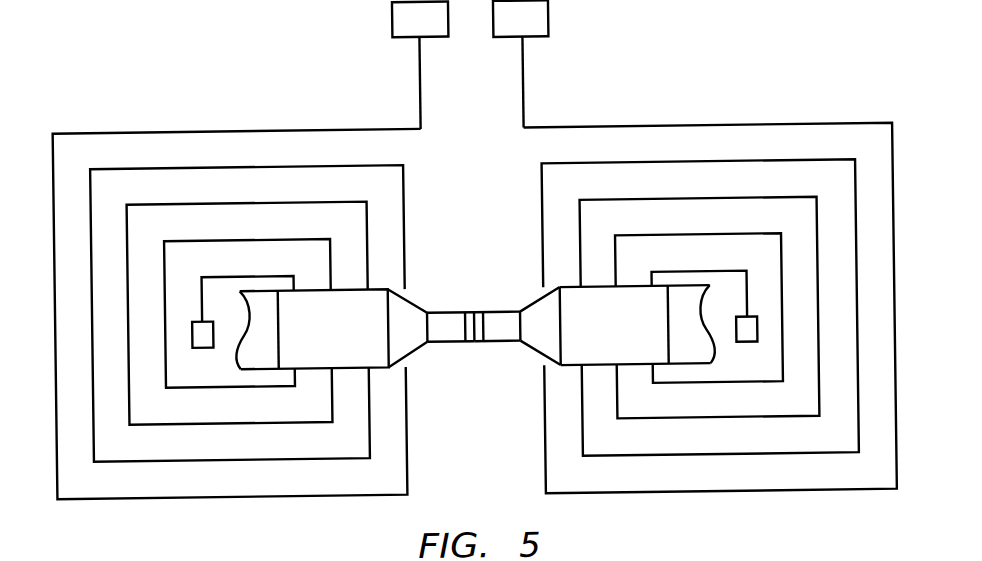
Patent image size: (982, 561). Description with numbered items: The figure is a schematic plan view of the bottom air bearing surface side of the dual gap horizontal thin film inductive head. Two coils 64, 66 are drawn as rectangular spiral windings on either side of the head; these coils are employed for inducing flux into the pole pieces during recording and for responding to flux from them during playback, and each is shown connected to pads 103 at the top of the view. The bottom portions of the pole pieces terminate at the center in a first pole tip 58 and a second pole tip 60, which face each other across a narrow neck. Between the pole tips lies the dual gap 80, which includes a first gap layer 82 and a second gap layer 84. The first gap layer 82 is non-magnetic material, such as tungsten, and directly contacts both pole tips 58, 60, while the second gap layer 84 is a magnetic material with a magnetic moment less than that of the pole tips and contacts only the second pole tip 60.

The pads 103 is at (411, 16).
The coil layer 64 is at (170, 200).
The coil layer 66 is at (779, 201).
The first pole tip 58 is at (448, 322).
The second pole tip 60 is at (502, 322).
The dual gap 80 is at (472, 258).
The first gap layer 82 is at (472, 343).
The second gap layer 84 is at (477, 343).